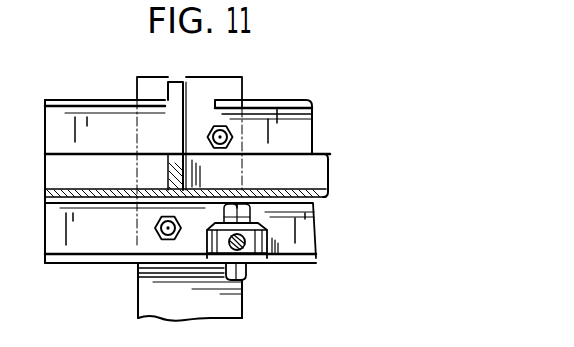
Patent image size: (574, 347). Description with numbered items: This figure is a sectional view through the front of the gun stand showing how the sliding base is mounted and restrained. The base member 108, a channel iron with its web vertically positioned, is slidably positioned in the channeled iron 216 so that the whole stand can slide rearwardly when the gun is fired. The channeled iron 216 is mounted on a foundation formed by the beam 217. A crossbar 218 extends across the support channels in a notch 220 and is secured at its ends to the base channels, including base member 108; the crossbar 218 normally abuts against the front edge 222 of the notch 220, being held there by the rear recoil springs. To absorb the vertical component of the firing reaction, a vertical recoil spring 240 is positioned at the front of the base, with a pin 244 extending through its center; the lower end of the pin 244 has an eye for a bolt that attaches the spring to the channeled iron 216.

The base member 108 is at (318, 180).
The channeled iron 216 is at (315, 233).
The beam 217 is at (138, 295).
The crossbar 218 is at (177, 105).
The notch 220 is at (198, 105).
The front edge 222 is at (165, 99).
The vertical recoil spring 240 is at (247, 276).
The pin 244 is at (243, 252).